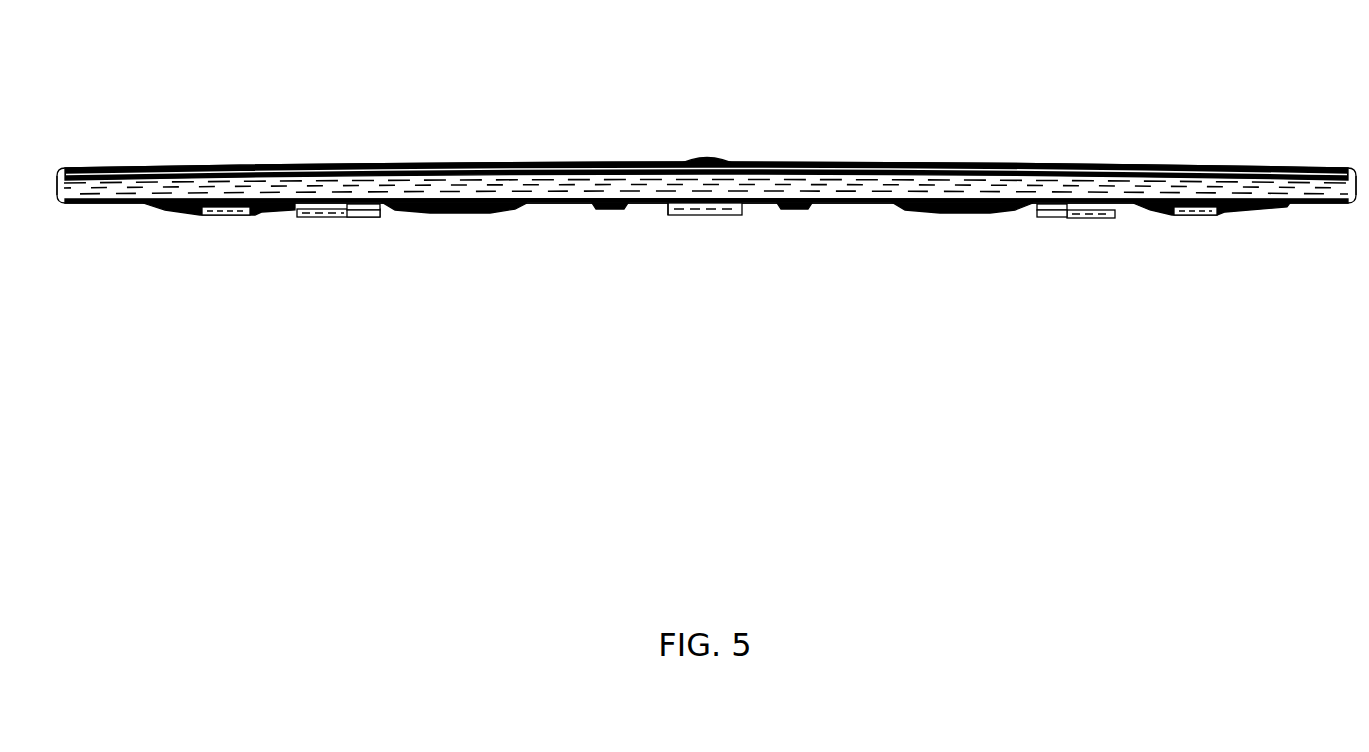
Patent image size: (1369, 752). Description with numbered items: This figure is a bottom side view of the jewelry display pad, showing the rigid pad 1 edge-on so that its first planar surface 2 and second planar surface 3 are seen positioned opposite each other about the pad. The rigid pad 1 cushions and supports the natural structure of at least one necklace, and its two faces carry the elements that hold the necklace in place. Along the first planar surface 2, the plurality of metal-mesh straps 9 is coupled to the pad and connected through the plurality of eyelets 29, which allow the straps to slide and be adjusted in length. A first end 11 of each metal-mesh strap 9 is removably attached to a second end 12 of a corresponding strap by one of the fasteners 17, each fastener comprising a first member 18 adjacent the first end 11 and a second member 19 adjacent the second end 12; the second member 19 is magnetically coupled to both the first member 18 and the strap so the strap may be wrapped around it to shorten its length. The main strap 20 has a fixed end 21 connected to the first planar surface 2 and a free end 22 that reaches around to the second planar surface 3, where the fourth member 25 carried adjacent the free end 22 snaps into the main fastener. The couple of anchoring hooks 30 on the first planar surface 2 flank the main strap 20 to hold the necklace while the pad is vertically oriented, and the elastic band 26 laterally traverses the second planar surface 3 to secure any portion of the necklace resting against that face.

The rigid pad 1 is at (90, 222).
The first planar surface 2 is at (1288, 205).
The second planar surface 3 is at (527, 167).
The metal-mesh straps 9 is at (482, 232).
The first end 11 is at (382, 216).
The second end 12 is at (336, 167).
The fasteners 17 is at (323, 252).
The first member 18 is at (358, 218).
The second member 19 is at (356, 167).
The main strap 20 is at (719, 236).
The fixed end 21 is at (668, 207).
The free end 22 is at (657, 167).
The fourth member 25 is at (713, 160).
The elastic band 26 is at (296, 167).
The eyelets 29 is at (262, 207).
The anchoring hooks 30 is at (607, 207).